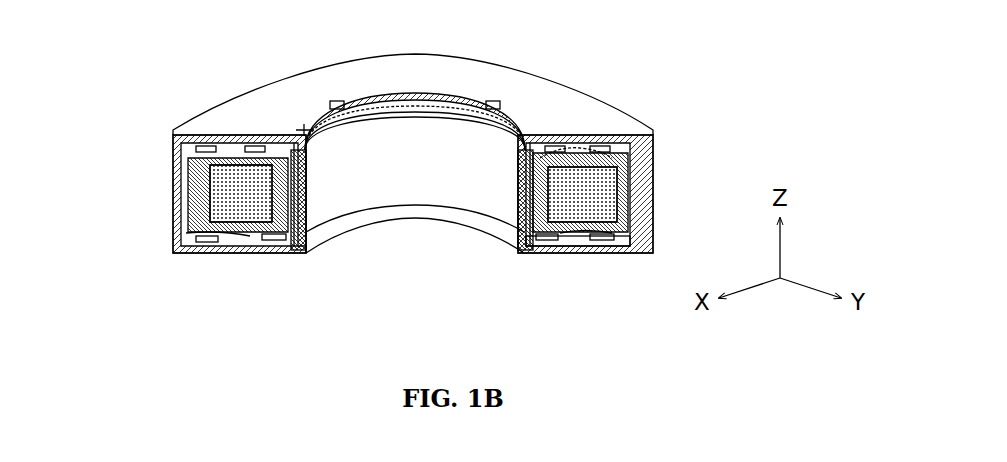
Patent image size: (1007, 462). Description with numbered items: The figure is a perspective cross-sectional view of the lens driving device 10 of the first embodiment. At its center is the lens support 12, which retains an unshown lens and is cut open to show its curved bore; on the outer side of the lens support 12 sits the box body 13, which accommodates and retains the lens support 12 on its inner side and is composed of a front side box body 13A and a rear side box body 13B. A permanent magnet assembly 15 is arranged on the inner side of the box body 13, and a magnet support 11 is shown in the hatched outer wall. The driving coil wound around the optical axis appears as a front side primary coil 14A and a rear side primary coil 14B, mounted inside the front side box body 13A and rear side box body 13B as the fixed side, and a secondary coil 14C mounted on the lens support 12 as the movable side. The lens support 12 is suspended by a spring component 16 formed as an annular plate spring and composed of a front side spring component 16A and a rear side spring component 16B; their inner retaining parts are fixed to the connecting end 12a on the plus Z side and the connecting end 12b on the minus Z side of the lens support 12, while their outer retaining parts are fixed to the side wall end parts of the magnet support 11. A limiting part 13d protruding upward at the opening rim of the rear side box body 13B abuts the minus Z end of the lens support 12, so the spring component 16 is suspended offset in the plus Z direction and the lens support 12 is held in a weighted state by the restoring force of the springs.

The lens driving device 10 is at (116, 56).
The magnet support 11 is at (648, 170).
The lens support 12 is at (488, 192).
The connecting end 12a is at (303, 126).
The connecting end 12b is at (310, 250).
The box body 13 is at (337, 192).
The front side box body 13A is at (178, 155).
The rear side box body 13B is at (100, 178).
The limiting part 13d is at (287, 255).
The front side primary coil 14A is at (565, 140).
The rear side primary coil 14B is at (245, 255).
The secondary coil 14C is at (310, 205).
The permanent magnet assembly 15 is at (648, 225).
The spring component 16 is at (554, 287).
The front side spring component 16A is at (600, 255).
The rear side spring component 16B is at (540, 255).